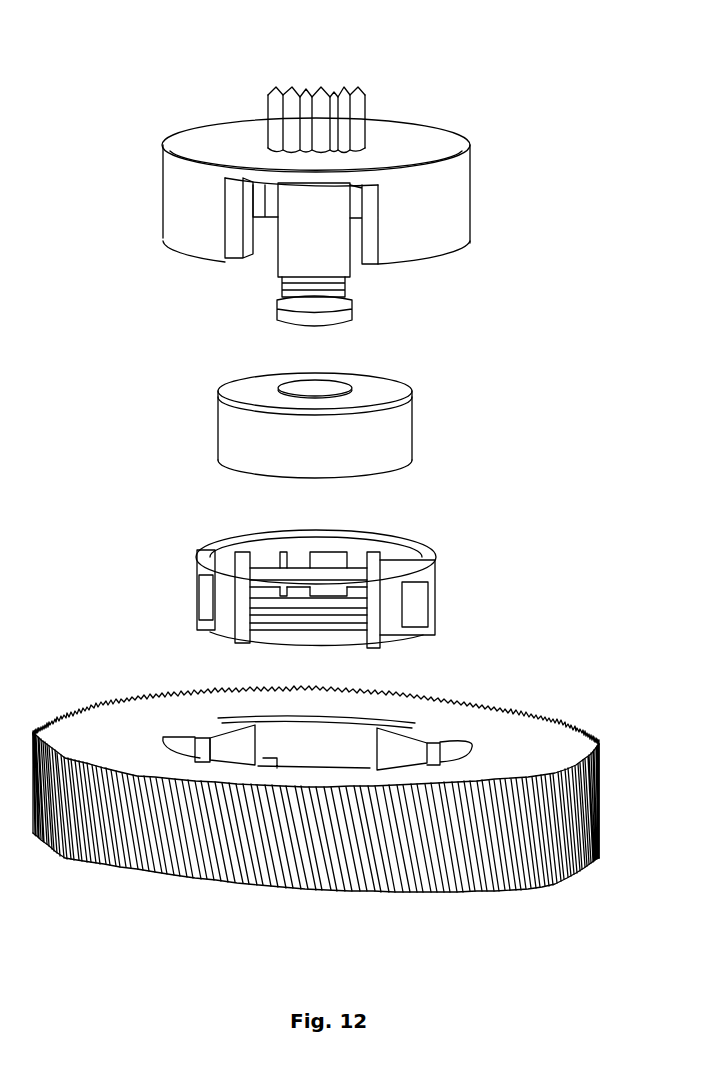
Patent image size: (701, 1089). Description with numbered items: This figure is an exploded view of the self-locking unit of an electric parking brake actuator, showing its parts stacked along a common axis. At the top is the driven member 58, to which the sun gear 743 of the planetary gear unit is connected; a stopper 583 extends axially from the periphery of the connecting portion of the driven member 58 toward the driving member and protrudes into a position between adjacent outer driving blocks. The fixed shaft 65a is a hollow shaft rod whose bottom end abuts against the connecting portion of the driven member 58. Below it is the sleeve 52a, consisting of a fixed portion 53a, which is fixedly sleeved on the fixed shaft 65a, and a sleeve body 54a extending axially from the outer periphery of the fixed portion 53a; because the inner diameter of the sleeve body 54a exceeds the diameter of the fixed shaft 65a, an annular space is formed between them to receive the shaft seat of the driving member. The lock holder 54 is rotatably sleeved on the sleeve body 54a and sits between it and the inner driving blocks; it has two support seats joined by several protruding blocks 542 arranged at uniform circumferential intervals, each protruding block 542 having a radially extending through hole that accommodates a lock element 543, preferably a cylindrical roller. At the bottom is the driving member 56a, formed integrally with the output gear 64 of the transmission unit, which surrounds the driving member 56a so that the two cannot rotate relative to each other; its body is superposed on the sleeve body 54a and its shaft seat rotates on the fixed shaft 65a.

The driven member 58 is at (363, 171).
The sun gear 743 is at (353, 90).
The stopper 583 is at (442, 215).
The fixed shaft 65a is at (290, 243).
The sleeve 52a is at (386, 417).
The fixed portion 53a is at (400, 390).
The sleeve body 54a is at (359, 434).
The lock holder 54 is at (250, 555).
The lock element 543 is at (202, 586).
The protruding block 542 is at (197, 626).
The output gear 64 is at (316, 750).
The driving member 56a is at (437, 730).